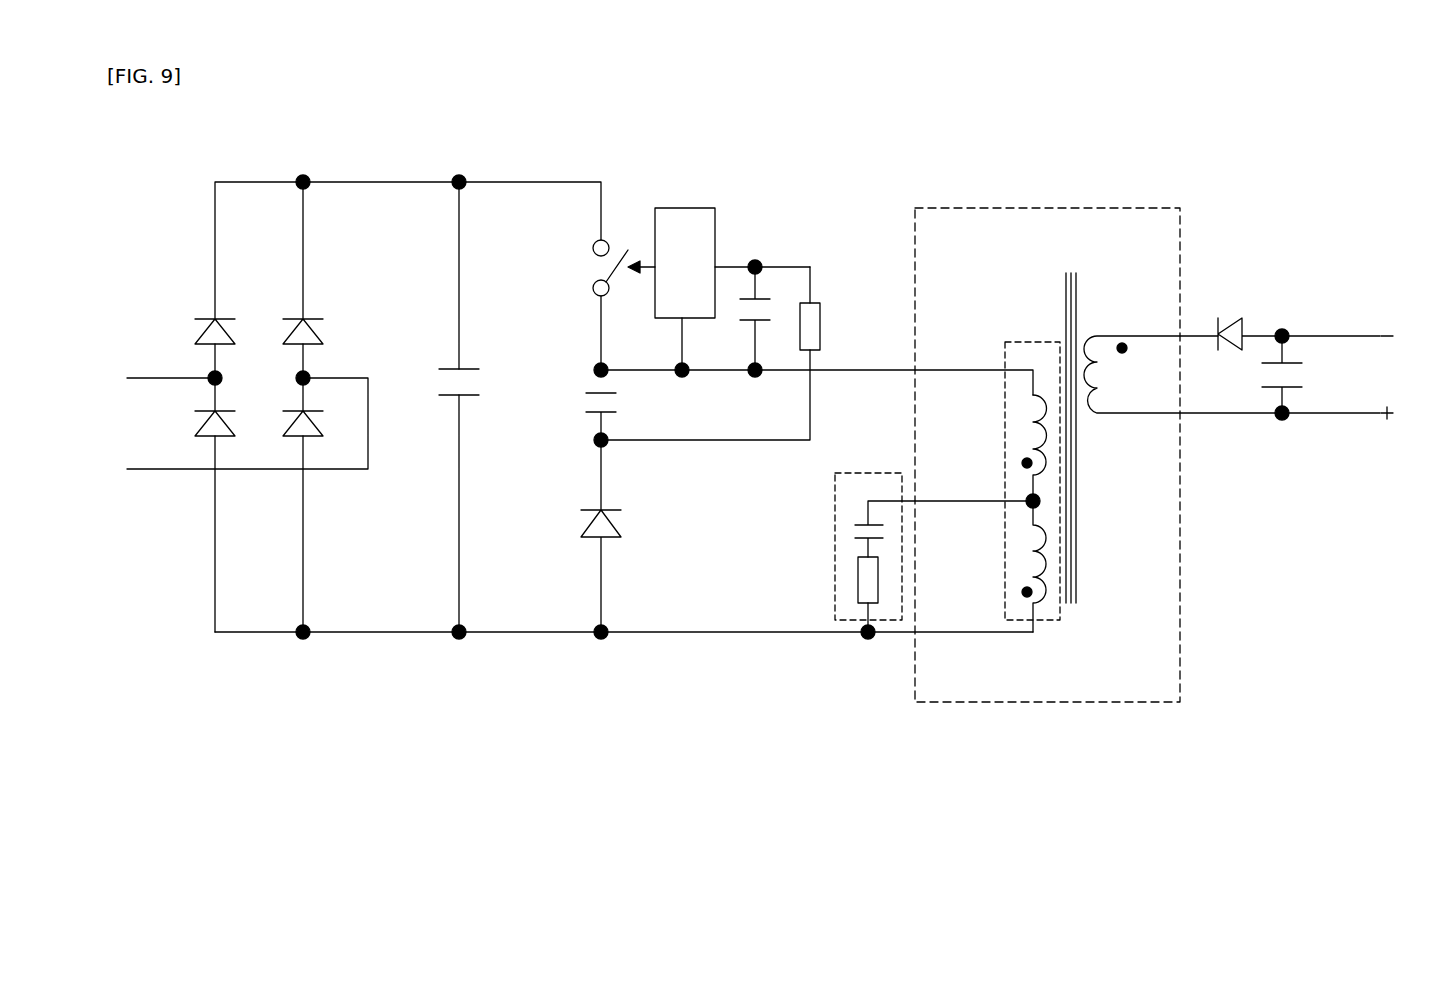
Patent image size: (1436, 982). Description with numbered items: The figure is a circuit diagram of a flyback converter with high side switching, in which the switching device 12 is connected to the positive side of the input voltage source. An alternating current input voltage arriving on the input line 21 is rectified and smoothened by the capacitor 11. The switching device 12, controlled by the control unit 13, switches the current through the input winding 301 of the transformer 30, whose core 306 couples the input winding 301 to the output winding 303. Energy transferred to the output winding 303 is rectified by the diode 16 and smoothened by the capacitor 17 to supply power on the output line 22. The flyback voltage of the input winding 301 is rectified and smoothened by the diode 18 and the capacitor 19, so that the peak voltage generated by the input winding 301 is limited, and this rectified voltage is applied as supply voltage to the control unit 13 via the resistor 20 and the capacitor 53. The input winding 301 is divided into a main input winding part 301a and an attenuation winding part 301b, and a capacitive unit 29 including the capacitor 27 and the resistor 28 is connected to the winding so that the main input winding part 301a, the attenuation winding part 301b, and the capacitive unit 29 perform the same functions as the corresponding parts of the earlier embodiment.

The capacitor 11 is at (440, 405).
The switching device 12 is at (580, 256).
The control unit 13 is at (717, 235).
The diode 16 is at (1238, 308).
The capacitor 17 is at (1307, 375).
The diode 18 is at (583, 552).
The capacitor 19 is at (580, 400).
The resistor 20 is at (827, 325).
The input line 21 is at (408, 643).
The output line 22 is at (1318, 420).
The capacitor 27 is at (840, 532).
The resistor 28 is at (853, 587).
The capacitive unit 29 is at (850, 460).
The transformer 30 is at (1019, 188).
The capacitor 53 is at (750, 322).
The input winding 301 is at (1002, 460).
The main input winding part 301a is at (1028, 407).
The attenuation winding part 301b is at (1023, 563).
The output winding 303 is at (1105, 403).
The core 306 is at (1073, 613).